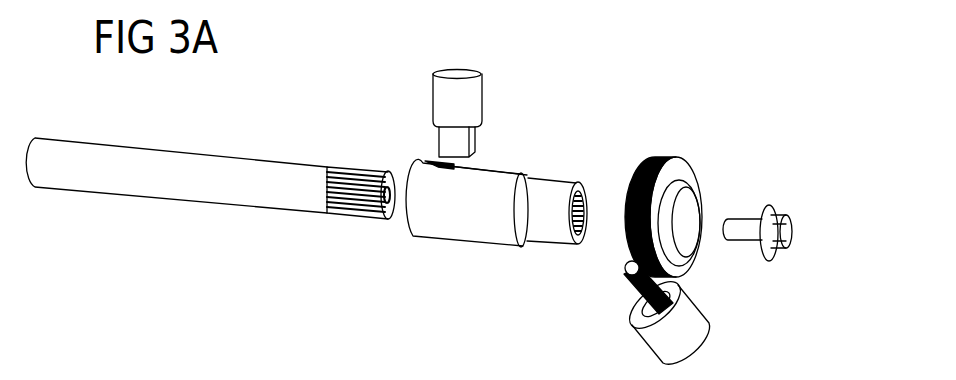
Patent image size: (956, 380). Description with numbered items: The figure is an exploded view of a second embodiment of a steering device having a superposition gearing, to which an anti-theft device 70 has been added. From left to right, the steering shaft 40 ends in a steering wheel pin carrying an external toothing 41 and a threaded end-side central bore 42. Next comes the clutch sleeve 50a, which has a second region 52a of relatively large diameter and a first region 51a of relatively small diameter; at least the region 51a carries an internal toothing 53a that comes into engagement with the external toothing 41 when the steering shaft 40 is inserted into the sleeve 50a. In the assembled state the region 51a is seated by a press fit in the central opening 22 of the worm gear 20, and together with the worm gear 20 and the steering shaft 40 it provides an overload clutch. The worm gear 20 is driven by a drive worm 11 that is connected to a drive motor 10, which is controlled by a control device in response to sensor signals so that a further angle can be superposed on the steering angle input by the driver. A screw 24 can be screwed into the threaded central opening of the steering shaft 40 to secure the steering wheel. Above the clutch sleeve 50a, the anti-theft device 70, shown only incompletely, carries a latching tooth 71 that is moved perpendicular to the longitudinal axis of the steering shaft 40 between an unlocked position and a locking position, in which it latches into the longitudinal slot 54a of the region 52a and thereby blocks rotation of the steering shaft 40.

The steering shaft 40 is at (198, 204).
The external toothing 41 is at (350, 221).
The end-side central bore 42 is at (385, 221).
The anti-theft device 70 is at (483, 90).
The latching tooth 71 is at (445, 138).
The clutch sleeve 50a is at (490, 258).
The second region of relatively large diameter 52a is at (506, 165).
The first region of relatively small diameter 51a is at (553, 178).
The internal toothing 53a is at (579, 249).
The longitudinal slot 54a is at (432, 167).
The worm gear 20 is at (682, 172).
The central opening 22 is at (694, 254).
The screw 24 is at (787, 252).
The drive worm 11 is at (630, 276).
The drive motor 10 is at (688, 342).